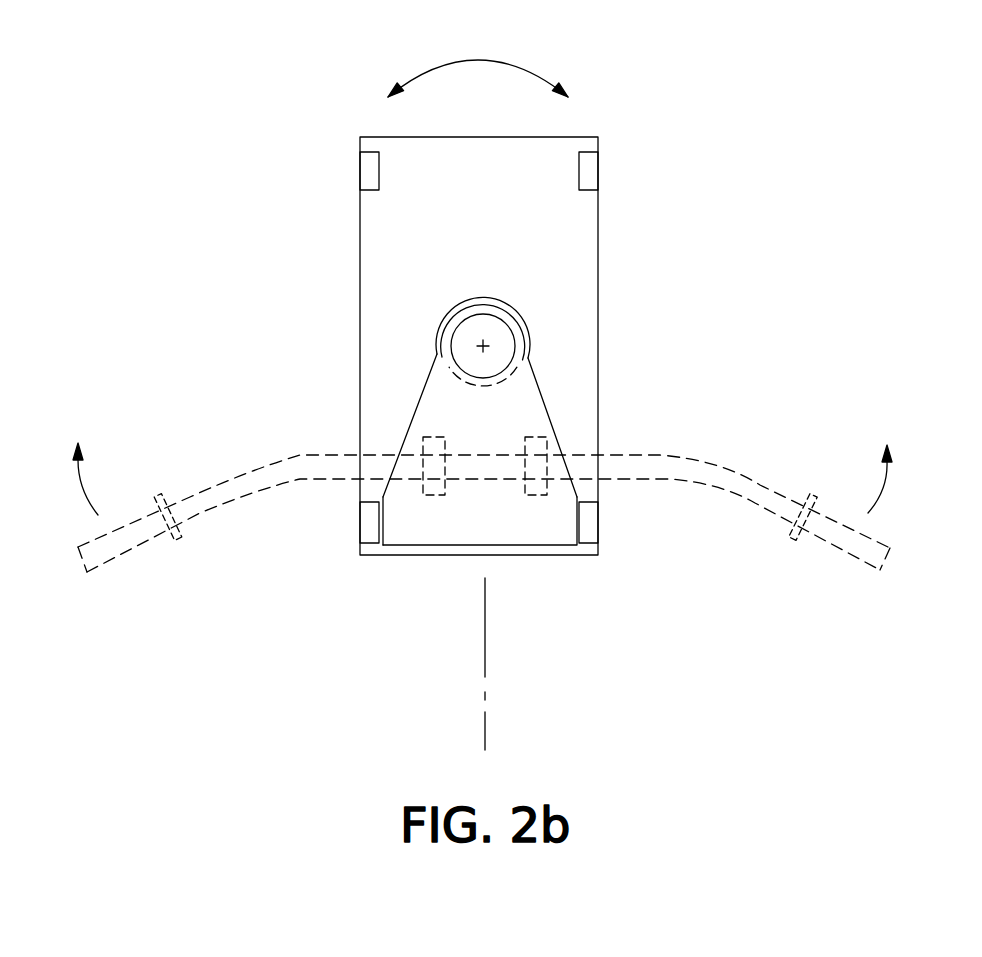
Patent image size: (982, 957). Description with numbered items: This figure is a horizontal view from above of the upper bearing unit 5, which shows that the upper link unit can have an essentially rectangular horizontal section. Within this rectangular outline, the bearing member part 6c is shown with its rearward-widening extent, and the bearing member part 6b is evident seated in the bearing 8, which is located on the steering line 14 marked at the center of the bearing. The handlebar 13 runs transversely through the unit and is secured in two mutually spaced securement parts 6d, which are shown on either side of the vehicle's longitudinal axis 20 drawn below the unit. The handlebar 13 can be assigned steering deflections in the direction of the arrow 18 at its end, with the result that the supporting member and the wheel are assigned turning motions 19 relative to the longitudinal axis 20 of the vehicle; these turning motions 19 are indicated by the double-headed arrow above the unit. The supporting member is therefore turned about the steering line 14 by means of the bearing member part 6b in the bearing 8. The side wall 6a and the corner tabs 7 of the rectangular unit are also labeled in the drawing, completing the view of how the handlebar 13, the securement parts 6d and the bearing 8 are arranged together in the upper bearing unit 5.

The handlebar mounting assembly 5 is at (270, 249).
The bracket side wall 6a is at (360, 523).
The bearing member part 6b is at (513, 365).
The bearing member part 6c is at (507, 528).
The securement parts 6d is at (523, 485).
The mounting tabs 7 is at (362, 170).
The bearing 8 is at (527, 327).
The handlebar 13 is at (677, 453).
The steering line 14 is at (487, 343).
The arrow 18 is at (479, 465).
The turning motions 19 is at (478, 65).
The longitudinal axis 20 is at (485, 727).